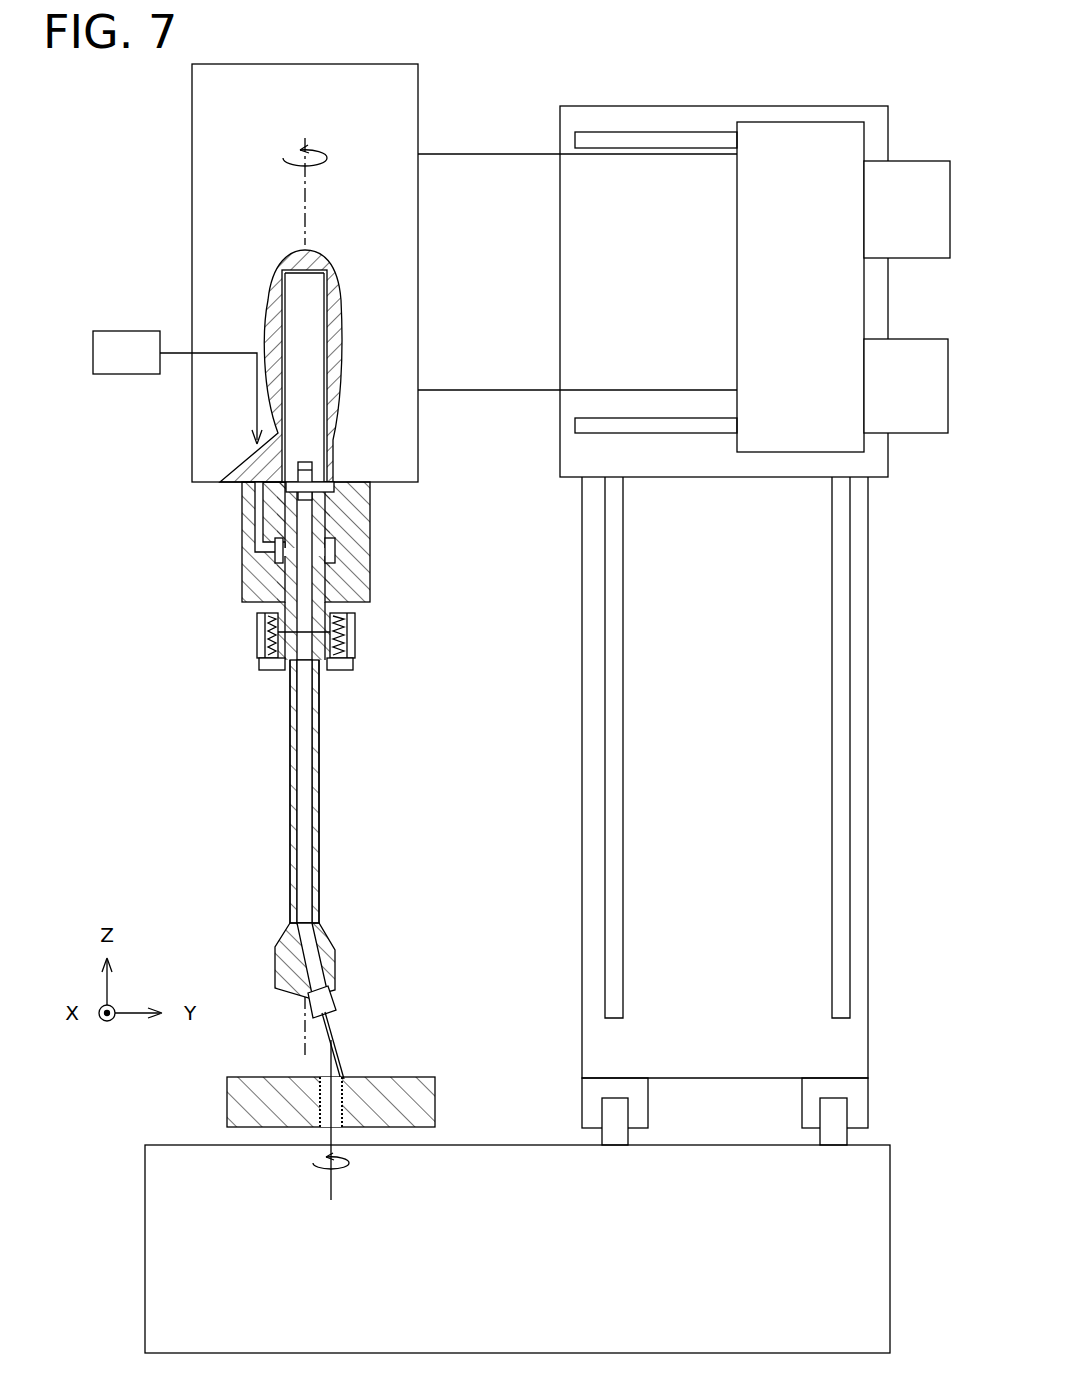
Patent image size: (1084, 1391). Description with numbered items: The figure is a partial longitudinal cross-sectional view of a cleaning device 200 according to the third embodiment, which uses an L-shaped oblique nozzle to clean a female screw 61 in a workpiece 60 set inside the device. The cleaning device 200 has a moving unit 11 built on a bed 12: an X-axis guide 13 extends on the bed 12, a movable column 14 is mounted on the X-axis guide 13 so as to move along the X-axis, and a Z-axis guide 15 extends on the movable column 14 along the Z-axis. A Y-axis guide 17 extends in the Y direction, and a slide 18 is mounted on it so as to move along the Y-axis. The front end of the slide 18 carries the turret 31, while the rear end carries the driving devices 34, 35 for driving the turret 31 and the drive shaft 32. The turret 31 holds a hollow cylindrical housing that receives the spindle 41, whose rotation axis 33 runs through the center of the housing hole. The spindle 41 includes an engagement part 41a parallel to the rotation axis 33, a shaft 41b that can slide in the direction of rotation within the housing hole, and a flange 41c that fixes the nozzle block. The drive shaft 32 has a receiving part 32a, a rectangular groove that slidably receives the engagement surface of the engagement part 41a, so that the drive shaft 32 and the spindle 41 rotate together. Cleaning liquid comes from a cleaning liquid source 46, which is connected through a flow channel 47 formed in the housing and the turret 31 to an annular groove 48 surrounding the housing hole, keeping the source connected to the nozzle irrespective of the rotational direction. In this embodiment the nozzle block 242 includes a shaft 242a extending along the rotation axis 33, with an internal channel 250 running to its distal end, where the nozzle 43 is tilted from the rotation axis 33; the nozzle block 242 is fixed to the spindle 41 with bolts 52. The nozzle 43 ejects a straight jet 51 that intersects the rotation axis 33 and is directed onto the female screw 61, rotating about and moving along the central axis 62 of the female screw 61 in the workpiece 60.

The cleaning device 200 is at (940, 48).
The moving unit 11 is at (640, 92).
The bed 12 is at (890, 1208).
The X-axis guide 13 is at (870, 1105).
The movable column 14 is at (870, 725).
The Z-axis guide 15 is at (623, 550).
The Y-axis guide 17 is at (598, 132).
The slide 18 is at (497, 392).
The turret 31 is at (418, 95).
The drive shaft 32 is at (295, 272).
The receiving part 32a is at (307, 462).
The rotation axis 33 is at (305, 205).
The driving device 34 is at (925, 161).
The driving device 35 is at (920, 339).
The spindle 41 is at (357, 615).
The engagement part 41a is at (333, 483).
The shaft 41b is at (285, 590).
The flange 41c is at (258, 622).
The nozzle 43 is at (335, 1005).
The cleaning liquid source 46 is at (110, 330).
The flow channel 47 is at (255, 525).
The annular groove 48 is at (335, 548).
The jet 51 is at (338, 1052).
The bolts 52 is at (272, 670).
The workpiece 60 is at (437, 1100).
The female screw 61 is at (336, 1115).
The central axis 62 is at (328, 1183).
The nozzle block 242 is at (292, 838).
The shaft 242a is at (293, 768).
The internal channel 250 is at (305, 775).